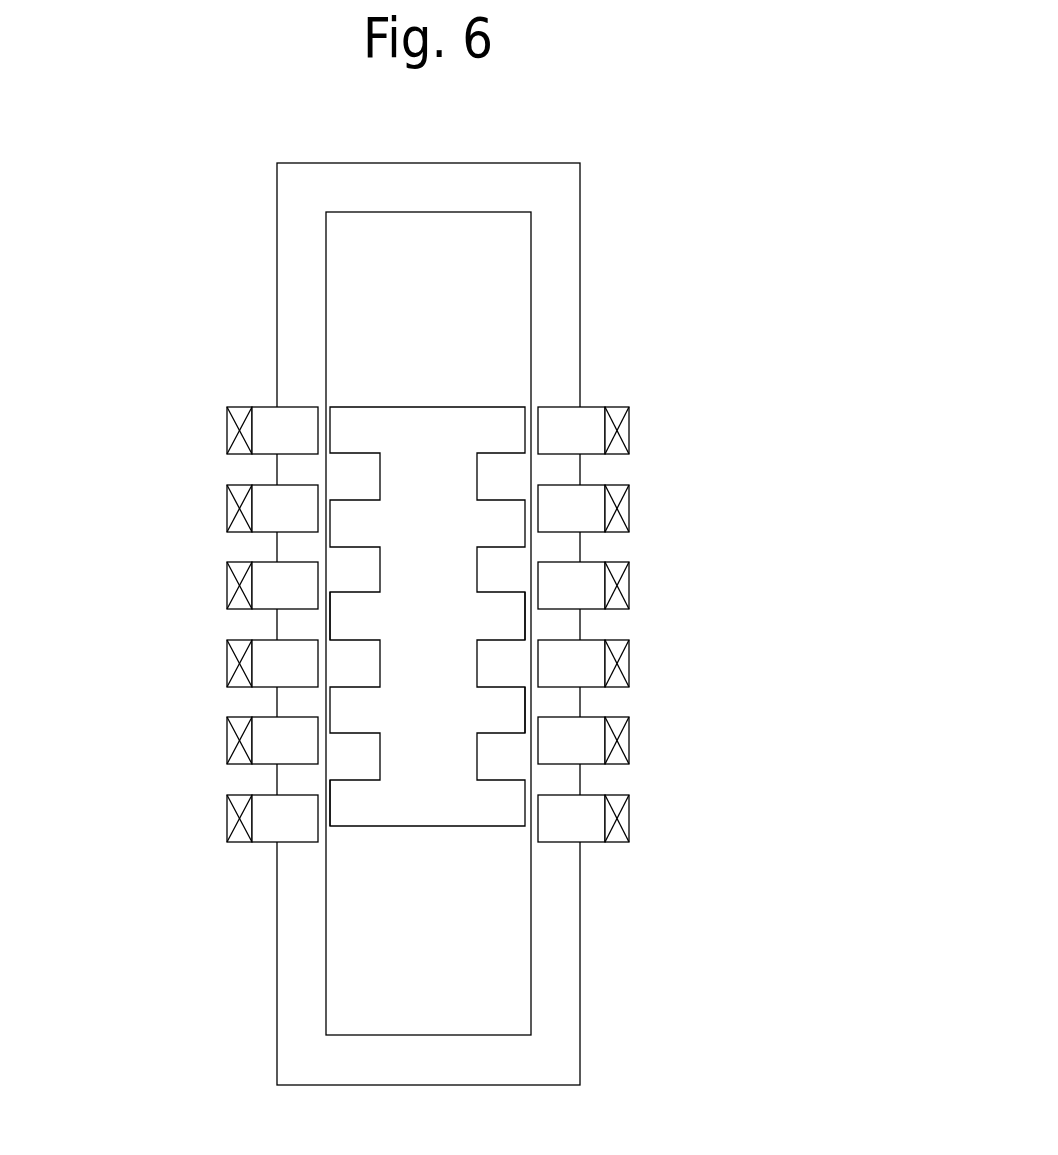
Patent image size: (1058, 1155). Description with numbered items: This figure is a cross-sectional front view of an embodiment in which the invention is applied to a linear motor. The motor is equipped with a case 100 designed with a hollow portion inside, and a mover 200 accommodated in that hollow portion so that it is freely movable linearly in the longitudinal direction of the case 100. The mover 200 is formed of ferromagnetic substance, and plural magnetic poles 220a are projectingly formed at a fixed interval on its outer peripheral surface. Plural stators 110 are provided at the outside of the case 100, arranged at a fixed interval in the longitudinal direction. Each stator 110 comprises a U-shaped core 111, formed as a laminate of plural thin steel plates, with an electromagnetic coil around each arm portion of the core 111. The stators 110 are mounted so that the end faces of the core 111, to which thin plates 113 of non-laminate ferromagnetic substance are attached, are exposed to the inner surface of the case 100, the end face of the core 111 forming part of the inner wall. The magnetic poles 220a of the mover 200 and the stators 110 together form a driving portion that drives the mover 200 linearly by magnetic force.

The case 100 is at (580, 213).
The stator 110 is at (630, 412).
The core 111 is at (632, 435).
The thin plate 113 is at (327, 427).
The mover 200 is at (423, 405).
The magnetic pole 220a is at (330, 623).